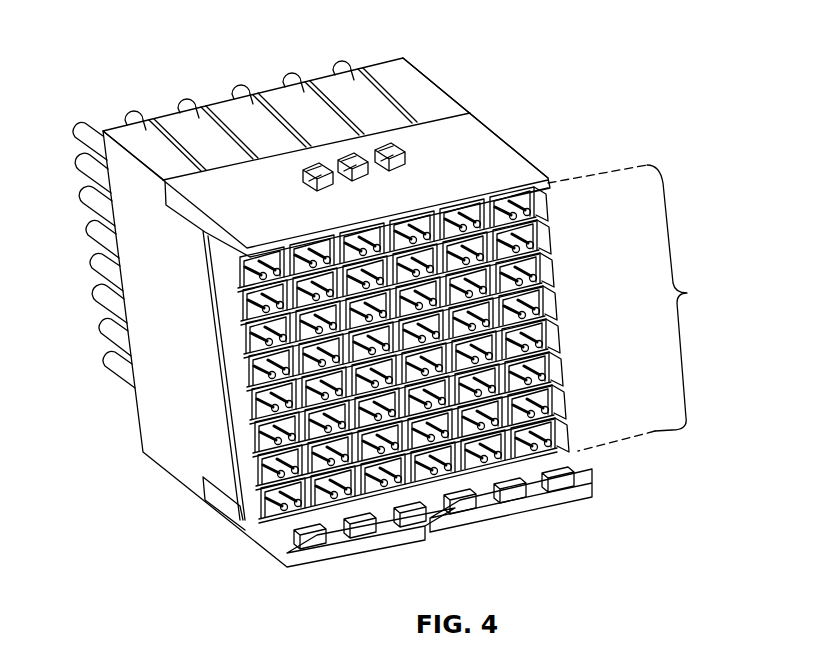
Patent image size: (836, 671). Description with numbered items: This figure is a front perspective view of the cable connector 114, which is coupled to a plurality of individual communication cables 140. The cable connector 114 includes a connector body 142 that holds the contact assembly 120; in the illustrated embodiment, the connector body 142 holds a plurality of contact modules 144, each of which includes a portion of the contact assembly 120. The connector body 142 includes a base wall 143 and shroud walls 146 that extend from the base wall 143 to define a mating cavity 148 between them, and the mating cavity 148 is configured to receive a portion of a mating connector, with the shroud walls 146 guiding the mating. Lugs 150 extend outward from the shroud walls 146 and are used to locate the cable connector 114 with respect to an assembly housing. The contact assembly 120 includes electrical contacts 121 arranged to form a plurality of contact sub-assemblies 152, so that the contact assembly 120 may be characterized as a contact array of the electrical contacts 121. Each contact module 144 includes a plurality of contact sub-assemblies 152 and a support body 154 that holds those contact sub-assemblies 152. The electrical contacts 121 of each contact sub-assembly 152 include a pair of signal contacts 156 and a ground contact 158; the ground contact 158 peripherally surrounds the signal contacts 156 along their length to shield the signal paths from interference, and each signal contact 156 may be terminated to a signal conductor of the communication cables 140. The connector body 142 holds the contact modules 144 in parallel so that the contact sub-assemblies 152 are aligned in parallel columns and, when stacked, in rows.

The cable connector 114 is at (490, 80).
The contact assembly 120 is at (642, 308).
The electrical contacts 121 is at (548, 452).
The individual communication cables 140 is at (106, 362).
The connector body 142 is at (243, 178).
The base wall 143 is at (233, 462).
The contact modules 144 is at (175, 391).
The shroud walls 146 is at (500, 158).
The mating cavity 148 is at (580, 454).
The lugs 150 is at (350, 157).
The contact sub-assemblies 152 is at (557, 232).
The support body 154 is at (433, 100).
The signal contacts 156 is at (440, 463).
The ground contact 158 is at (577, 428).